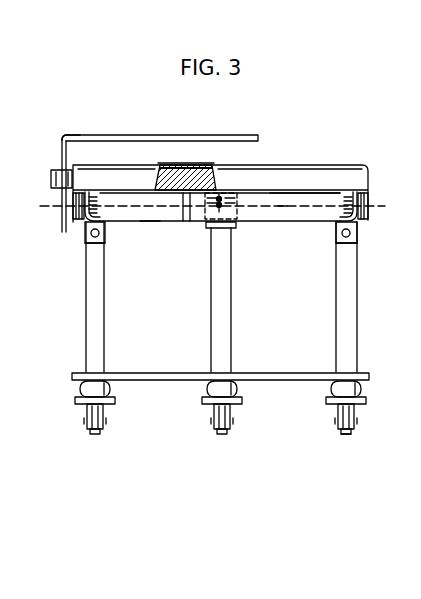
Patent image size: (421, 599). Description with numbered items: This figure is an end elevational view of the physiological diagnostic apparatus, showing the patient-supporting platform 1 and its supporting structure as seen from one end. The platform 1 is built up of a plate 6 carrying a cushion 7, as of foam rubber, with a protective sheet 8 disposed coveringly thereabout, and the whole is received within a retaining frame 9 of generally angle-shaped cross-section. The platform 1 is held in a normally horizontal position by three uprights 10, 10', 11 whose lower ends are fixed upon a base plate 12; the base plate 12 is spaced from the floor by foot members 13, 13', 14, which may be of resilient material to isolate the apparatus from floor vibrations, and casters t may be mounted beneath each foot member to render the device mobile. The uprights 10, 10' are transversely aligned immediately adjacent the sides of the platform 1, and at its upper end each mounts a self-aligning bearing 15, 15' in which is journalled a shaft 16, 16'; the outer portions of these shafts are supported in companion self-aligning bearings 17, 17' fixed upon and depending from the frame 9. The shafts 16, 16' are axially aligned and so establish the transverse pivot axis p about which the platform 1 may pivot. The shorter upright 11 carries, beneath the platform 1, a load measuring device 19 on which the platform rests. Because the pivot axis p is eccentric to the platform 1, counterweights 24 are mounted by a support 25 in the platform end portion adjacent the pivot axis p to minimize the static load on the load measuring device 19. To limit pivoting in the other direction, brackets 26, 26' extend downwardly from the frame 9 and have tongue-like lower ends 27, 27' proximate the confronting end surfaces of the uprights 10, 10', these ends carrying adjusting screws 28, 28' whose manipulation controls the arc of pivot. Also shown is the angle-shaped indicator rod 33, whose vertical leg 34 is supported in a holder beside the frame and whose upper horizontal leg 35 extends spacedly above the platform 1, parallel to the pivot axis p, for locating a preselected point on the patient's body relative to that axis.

The platform 1 is at (318, 165).
The plate 6 is at (203, 165).
The cushion 7 is at (197, 165).
The protective sheet 8 is at (172, 168).
The retaining frame 9 is at (185, 220).
The upright 10 is at (71, 297).
The upright 10' is at (364, 297).
The upright 11 is at (222, 314).
The base plate 12 is at (283, 379).
The foot member 13 is at (69, 407).
The foot member 13' is at (367, 408).
The foot member 14 is at (205, 383).
The self-aligning bearing 15 is at (212, 207).
The self-aligning bearing 15' is at (305, 203).
The shaft 16 is at (65, 229).
The shaft 16' is at (368, 223).
The self-aligning bearing 17 is at (50, 214).
The self-aligning bearing 17' is at (376, 202).
The load measuring device 19 is at (202, 222).
The counterweights 24 is at (262, 212).
The support 25 is at (148, 222).
The bracket 26 is at (77, 256).
The bracket 26' is at (371, 253).
The tongue-like lower end 27 is at (110, 276).
The tongue-like lower end 27' is at (328, 278).
The adjusting screw 28 is at (112, 240).
The adjusting screw 28' is at (321, 240).
The indicator rod 33 is at (62, 137).
The vertical leg 34 is at (62, 146).
The horizontal leg 35 is at (97, 135).
The pivot axis p is at (282, 206).
The casters t is at (345, 434).